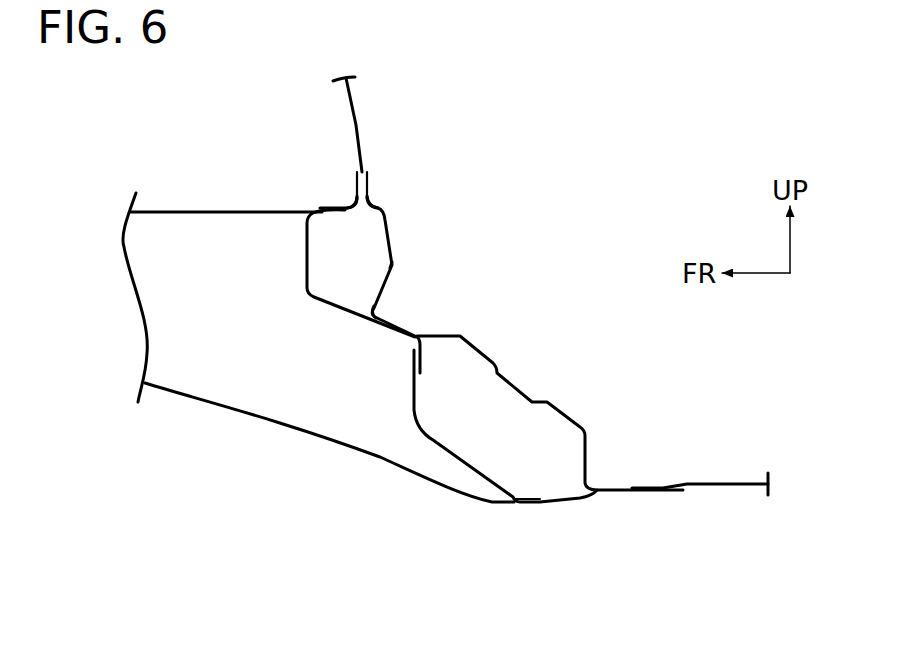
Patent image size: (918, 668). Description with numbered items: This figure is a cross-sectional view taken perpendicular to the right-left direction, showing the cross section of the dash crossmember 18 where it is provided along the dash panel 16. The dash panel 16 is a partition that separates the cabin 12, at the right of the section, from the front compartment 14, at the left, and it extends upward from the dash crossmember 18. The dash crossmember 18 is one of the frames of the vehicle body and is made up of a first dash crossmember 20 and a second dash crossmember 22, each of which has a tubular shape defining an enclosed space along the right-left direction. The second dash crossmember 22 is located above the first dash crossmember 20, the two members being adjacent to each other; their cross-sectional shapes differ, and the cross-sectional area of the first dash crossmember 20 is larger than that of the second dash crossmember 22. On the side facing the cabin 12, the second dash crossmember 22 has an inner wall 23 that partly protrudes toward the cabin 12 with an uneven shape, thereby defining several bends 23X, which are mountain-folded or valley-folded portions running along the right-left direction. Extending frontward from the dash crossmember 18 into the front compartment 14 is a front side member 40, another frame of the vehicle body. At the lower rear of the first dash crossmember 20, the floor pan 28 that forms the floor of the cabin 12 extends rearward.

The cabin 12 is at (605, 116).
The front compartment 14 is at (196, 141).
The dash panel 16 is at (350, 121).
The dash crossmember 18 is at (410, 547).
The first dash crossmember 20 is at (454, 427).
The second dash crossmember 22 is at (333, 288).
The inner wall 23 is at (392, 237).
The bend 23X is at (372, 197).
The floor pan 28 is at (733, 483).
The front side member 40 is at (208, 372).